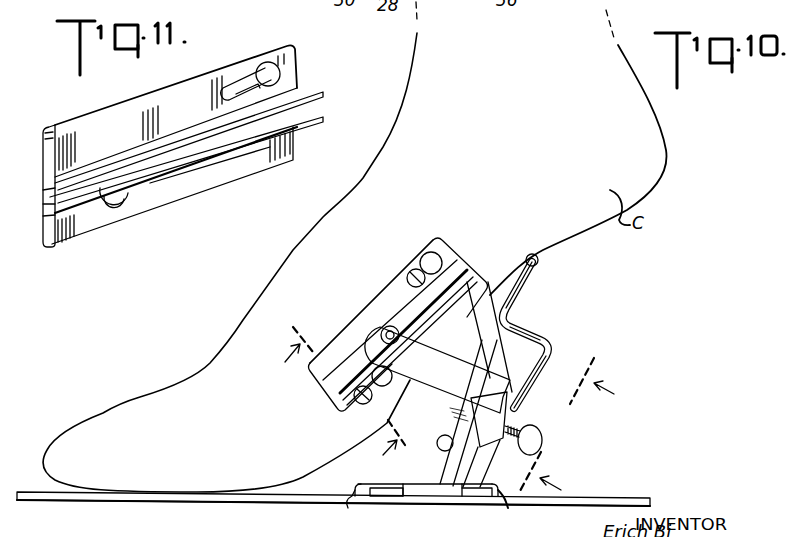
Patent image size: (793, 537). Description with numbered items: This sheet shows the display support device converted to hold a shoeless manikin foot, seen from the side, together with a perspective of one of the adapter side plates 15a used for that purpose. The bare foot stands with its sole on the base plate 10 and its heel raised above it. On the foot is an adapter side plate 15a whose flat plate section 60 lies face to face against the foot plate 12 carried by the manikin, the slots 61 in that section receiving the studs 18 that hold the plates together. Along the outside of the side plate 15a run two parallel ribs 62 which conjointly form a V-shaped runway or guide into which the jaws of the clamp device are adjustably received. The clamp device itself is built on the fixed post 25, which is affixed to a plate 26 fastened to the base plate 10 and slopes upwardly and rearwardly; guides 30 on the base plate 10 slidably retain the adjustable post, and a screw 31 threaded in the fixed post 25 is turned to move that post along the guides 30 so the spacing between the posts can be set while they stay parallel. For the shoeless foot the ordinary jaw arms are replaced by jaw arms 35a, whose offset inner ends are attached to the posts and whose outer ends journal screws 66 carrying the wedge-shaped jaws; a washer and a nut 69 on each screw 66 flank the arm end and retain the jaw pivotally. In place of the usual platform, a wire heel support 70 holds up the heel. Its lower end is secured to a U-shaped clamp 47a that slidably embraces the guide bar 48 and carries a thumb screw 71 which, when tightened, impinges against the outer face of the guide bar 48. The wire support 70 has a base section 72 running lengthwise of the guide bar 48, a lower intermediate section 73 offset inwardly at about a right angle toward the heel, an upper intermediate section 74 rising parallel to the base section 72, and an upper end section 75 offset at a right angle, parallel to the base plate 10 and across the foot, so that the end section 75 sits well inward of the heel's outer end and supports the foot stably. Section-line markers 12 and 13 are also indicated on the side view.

In FIG. 10, the base plate 10 is at (67, 501).
In FIG. 10, the foot plates 12 is at (358, 391).
In FIG. 10, the section line 13 is at (558, 424).
In FIG. 11, the adapter side plates 15a is at (84, 240).
In FIG. 10, the adapter side plates 15a is at (310, 365).
In FIG. 10, the studs 18 is at (414, 272).
In FIG. 10, the fixed post 25 is at (420, 486).
In FIG. 10, the plate 26 is at (384, 490).
In FIG. 10, the guides 30 is at (350, 497).
In FIG. 10, the screw 31 is at (441, 434).
In FIG. 10, the jaw arms 35a is at (460, 360).
In FIG. 10, the U-shaped clamp 47a is at (437, 370).
In FIG. 10, the guide bar 48 is at (442, 462).
In FIG. 11, the flat plate sections 60 is at (85, 131).
In FIG. 10, the flat plate sections 60 is at (446, 240).
In FIG. 11, the slots 61 is at (278, 70).
In FIG. 10, the slots 61 is at (422, 258).
In FIG. 11, the parallel ribs 62 is at (200, 150).
In FIG. 10, the parallel ribs 62 is at (458, 262).
In FIG. 10, the screws 66 is at (386, 325).
In FIG. 10, the nut 69 is at (384, 330).
In FIG. 10, the wire heel support 70 is at (553, 328).
In FIG. 10, the thumb screw 71 is at (540, 440).
In FIG. 10, the base section 72 is at (553, 356).
In FIG. 10, the lower intermediate section 73 is at (524, 323).
In FIG. 10, the upper intermediate section 74 is at (536, 283).
In FIG. 10, the upper end section 75 is at (542, 260).